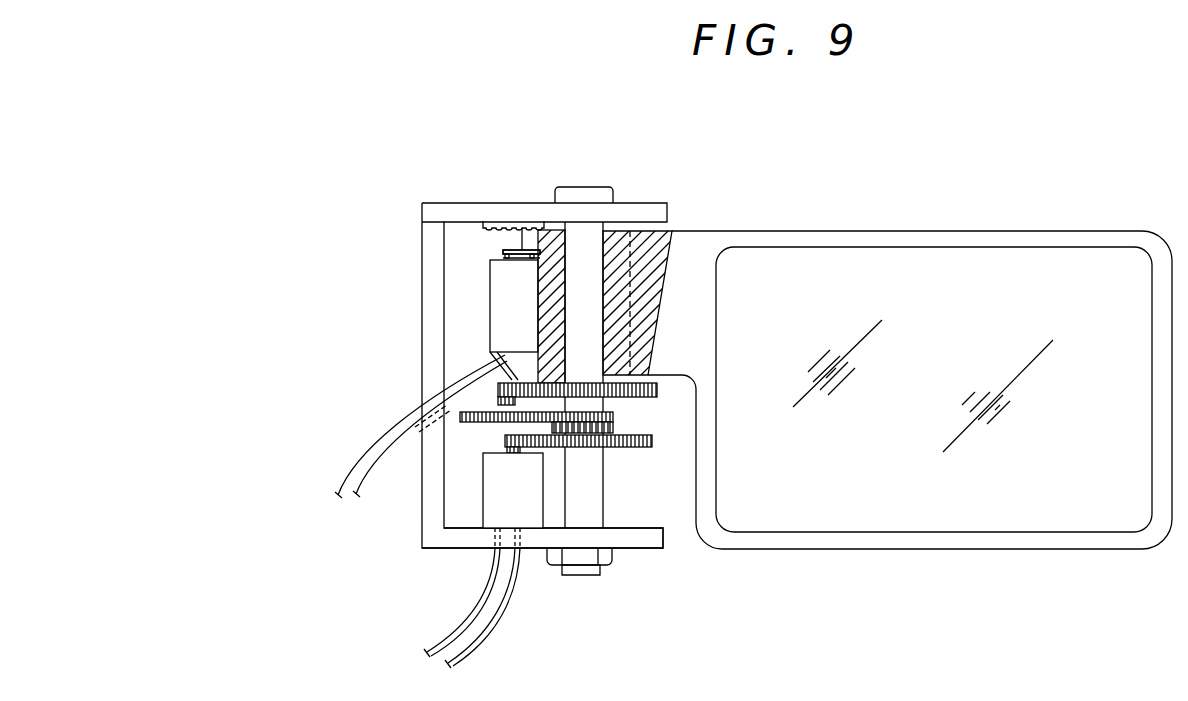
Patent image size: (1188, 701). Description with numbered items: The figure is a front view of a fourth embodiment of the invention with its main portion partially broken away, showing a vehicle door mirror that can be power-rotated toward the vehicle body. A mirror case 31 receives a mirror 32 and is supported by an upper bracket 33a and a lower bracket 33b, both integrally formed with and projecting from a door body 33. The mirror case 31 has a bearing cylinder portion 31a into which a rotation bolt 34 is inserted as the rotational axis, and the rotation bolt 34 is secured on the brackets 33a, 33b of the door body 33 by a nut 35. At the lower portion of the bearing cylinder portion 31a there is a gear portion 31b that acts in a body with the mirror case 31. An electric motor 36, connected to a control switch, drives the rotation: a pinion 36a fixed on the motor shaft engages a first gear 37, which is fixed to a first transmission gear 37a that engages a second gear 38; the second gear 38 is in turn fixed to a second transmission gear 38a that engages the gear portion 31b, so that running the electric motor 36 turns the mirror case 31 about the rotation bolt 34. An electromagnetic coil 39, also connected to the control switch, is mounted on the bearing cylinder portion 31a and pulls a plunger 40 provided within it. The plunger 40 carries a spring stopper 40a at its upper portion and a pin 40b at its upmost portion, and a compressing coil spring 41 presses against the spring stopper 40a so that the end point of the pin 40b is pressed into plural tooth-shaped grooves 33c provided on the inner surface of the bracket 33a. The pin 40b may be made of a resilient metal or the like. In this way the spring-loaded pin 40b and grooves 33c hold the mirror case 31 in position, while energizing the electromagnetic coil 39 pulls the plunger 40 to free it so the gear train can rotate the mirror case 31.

The mirror case 31 is at (778, 231).
The bearing cylinder portion 31a is at (557, 229).
The gear portion 31b is at (510, 362).
The mirror 32 is at (1005, 258).
The door body 33 is at (445, 197).
The bracket 33a is at (637, 204).
The bracket 33b is at (652, 549).
The grooves 33c is at (497, 221).
The rotation bolt 34 is at (558, 512).
The nut 35 is at (606, 566).
The electric motor 36 is at (493, 507).
The pinion 36a is at (490, 447).
The first gear 37 is at (625, 448).
The first transmission gear 37a is at (615, 424).
The second gear 38 is at (470, 424).
The second transmission gear 38a is at (467, 378).
The electromagnetic coil 39 is at (490, 305).
The plunger 40 is at (505, 256).
The spring stopper 40a is at (503, 250).
The pin 40b is at (503, 250).
The compressing coil spring 41 is at (505, 260).